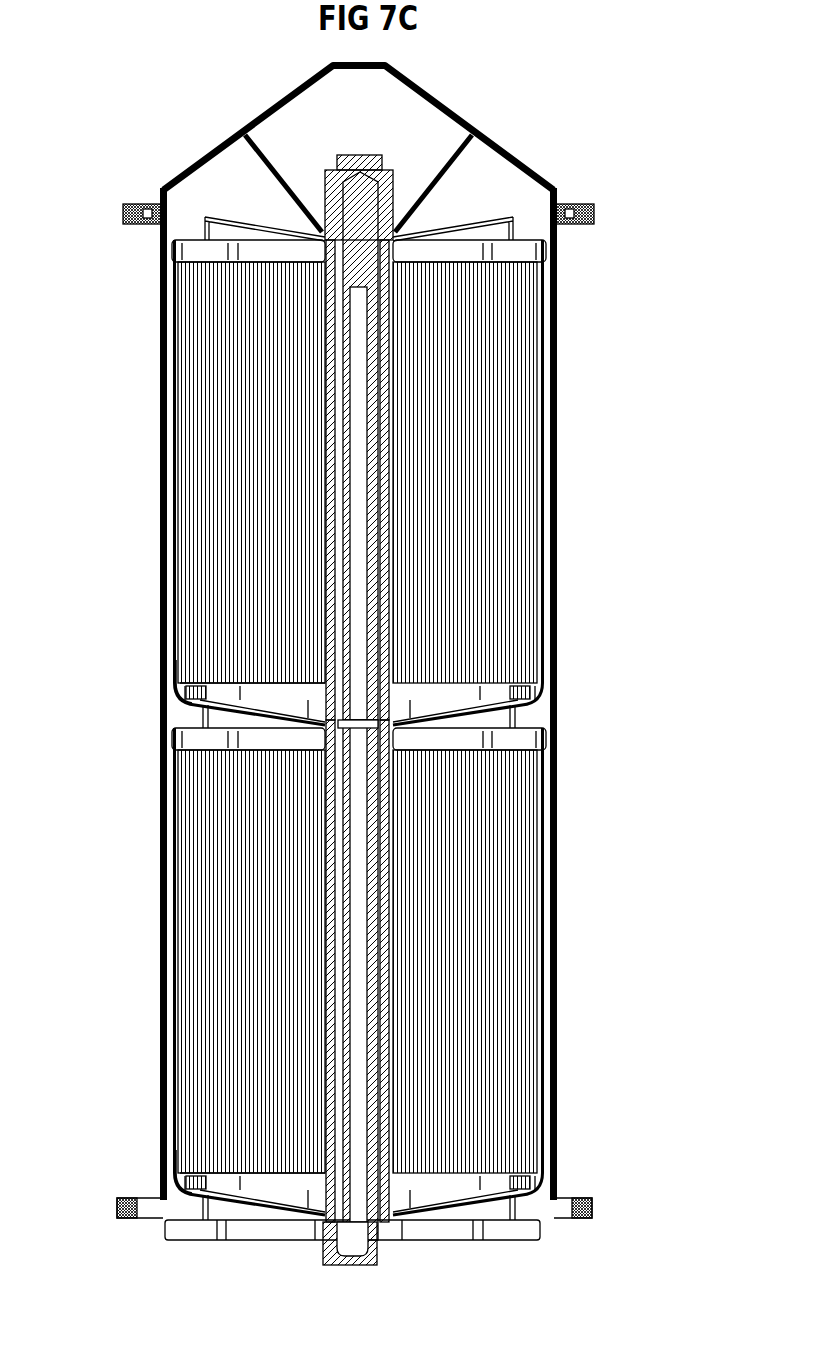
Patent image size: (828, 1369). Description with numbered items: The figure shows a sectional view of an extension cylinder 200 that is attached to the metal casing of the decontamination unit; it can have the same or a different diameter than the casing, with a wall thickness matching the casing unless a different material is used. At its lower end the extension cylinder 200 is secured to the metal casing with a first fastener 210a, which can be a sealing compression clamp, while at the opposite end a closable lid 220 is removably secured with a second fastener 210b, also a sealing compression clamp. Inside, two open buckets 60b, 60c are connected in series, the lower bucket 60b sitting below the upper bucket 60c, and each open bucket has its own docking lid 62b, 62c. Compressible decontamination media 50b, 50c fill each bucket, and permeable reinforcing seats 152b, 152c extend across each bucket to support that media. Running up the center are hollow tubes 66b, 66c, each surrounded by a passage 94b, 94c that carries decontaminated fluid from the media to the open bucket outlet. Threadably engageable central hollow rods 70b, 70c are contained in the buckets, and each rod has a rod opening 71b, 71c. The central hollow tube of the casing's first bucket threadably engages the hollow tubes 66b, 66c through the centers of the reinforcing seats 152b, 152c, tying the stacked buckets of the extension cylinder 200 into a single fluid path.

The extension cylinder 200 is at (556, 858).
The closable lid 220 is at (422, 85).
The first fastener 210a is at (592, 1203).
The second fastener 210b is at (596, 214).
The open bucket 60c is at (556, 462).
The open bucket 60b is at (556, 1013).
The docking lid 62c is at (527, 225).
The docking lid 62b is at (556, 721).
The compressible decontamination media 50c is at (212, 322).
The compressible decontamination media 50b is at (210, 996).
The hollow tube 66c is at (320, 428).
The hollow tube 66b is at (340, 878).
The threadably engageable central hollow rod 70c is at (400, 358).
The threadably engageable central hollow rod 70b is at (405, 905).
The rod opening 71c is at (440, 292).
The rod opening 71b is at (435, 772).
The passage 94c is at (455, 695).
The passage 94b is at (445, 1180).
The permeable reinforcing seat 152c is at (172, 662).
The permeable reinforcing seat 152b is at (165, 1162).